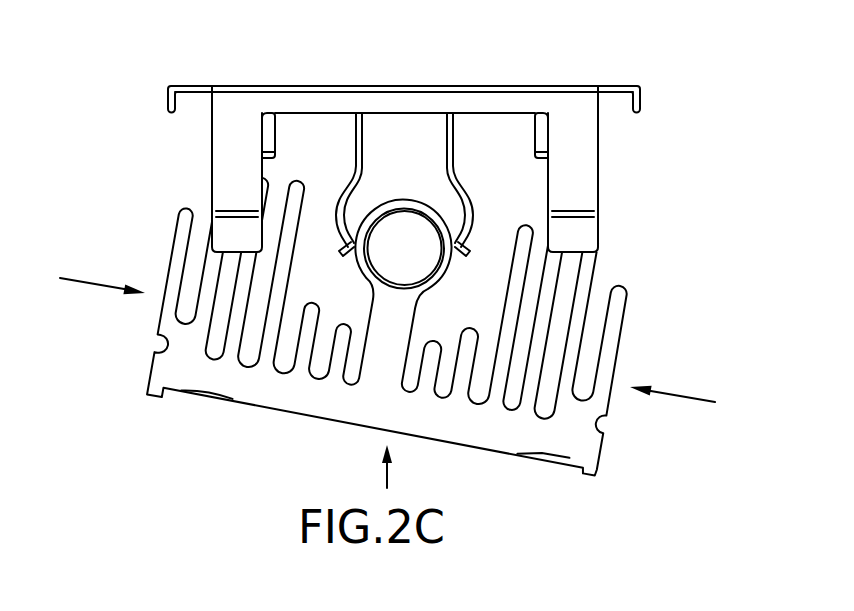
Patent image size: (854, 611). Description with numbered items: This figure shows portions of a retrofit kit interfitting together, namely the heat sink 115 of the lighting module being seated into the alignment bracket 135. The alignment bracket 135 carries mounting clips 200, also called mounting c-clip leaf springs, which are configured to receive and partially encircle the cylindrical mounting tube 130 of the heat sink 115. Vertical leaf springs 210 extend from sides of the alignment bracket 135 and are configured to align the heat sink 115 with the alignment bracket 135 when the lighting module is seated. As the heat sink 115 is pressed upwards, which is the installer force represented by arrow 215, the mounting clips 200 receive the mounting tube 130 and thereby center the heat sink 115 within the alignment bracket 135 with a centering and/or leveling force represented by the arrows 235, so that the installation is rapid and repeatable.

The heat sink 115 is at (622, 317).
The mounting tube 130 is at (404, 200).
The alignment bracket 135 is at (617, 86).
The mounting clips 200 is at (470, 190).
The vertical leaf springs 210 is at (212, 157).
The arrow 215 is at (384, 478).
The arrows 235 is at (88, 283).